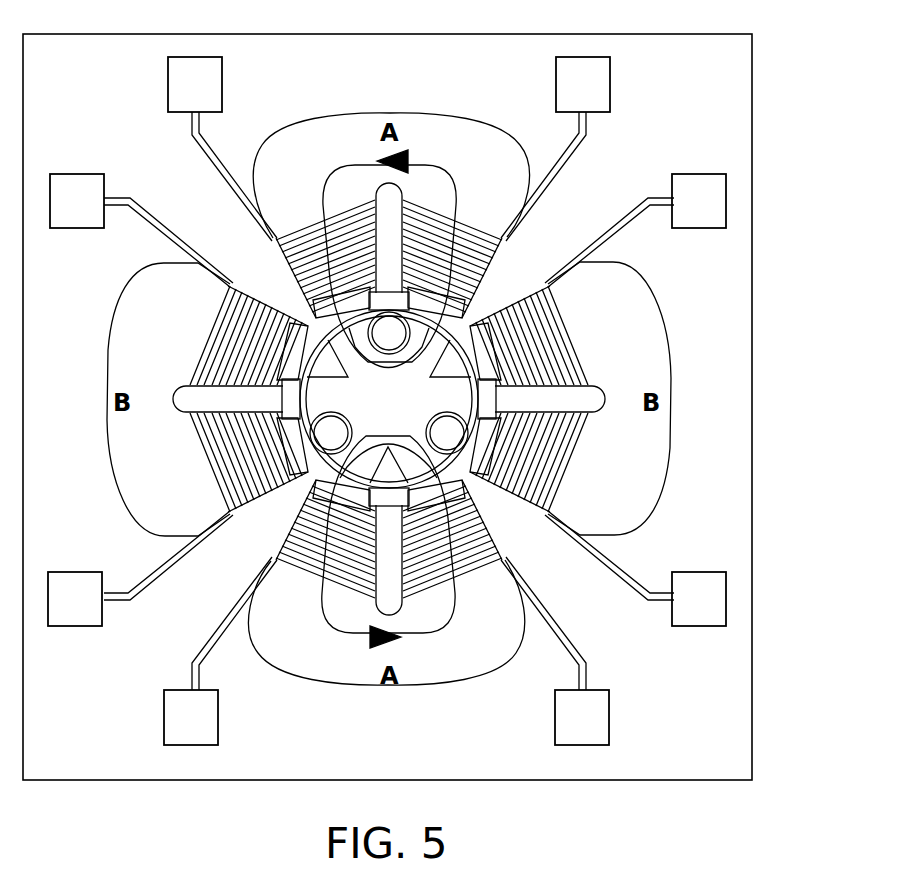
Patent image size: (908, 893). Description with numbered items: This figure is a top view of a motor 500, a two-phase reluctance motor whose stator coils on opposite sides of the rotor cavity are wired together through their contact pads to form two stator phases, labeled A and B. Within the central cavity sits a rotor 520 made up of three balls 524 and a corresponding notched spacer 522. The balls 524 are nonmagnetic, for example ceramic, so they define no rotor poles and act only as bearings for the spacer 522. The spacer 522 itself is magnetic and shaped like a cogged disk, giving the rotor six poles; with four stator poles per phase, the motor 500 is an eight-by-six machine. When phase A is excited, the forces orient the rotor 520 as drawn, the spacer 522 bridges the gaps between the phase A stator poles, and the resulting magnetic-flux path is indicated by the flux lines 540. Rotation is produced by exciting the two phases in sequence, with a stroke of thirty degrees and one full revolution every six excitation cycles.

The motor 500 is at (860, 68).
The rotor 520 is at (293, 493).
The notched spacer 522 is at (408, 412).
The balls 524 is at (400, 332).
The flux lines 540 is at (345, 170).